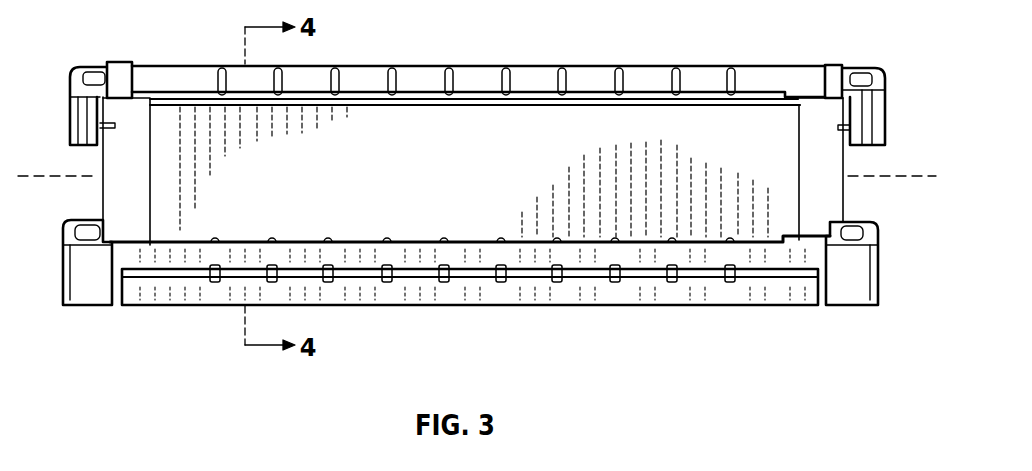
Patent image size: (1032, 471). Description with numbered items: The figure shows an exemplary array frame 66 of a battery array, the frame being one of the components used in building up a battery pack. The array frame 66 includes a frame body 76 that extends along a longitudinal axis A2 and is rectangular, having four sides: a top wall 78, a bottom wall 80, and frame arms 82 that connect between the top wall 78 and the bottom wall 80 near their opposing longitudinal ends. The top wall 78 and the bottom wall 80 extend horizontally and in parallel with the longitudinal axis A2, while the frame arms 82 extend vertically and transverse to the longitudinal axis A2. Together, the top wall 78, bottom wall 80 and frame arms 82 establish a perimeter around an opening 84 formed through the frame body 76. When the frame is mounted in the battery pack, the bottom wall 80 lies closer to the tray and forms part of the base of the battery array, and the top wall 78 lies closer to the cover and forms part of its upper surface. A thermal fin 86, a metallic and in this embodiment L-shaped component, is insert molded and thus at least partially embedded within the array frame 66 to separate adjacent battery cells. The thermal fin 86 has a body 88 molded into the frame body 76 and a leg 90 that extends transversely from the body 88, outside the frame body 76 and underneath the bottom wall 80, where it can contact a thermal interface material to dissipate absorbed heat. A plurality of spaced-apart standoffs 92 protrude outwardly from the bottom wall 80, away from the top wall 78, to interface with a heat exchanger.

The array frame 66 is at (478, 52).
The frame body 76 is at (838, 67).
The top wall 78 is at (701, 77).
The bottom wall 80 is at (698, 262).
The frame arms 82 is at (102, 174).
The opening 84 is at (551, 108).
The thermal fin 86 is at (747, 232).
The body 88 is at (419, 177).
The leg 90 is at (590, 290).
The standoffs 92 is at (386, 284).
The longitudinal axis A2 is at (888, 178).